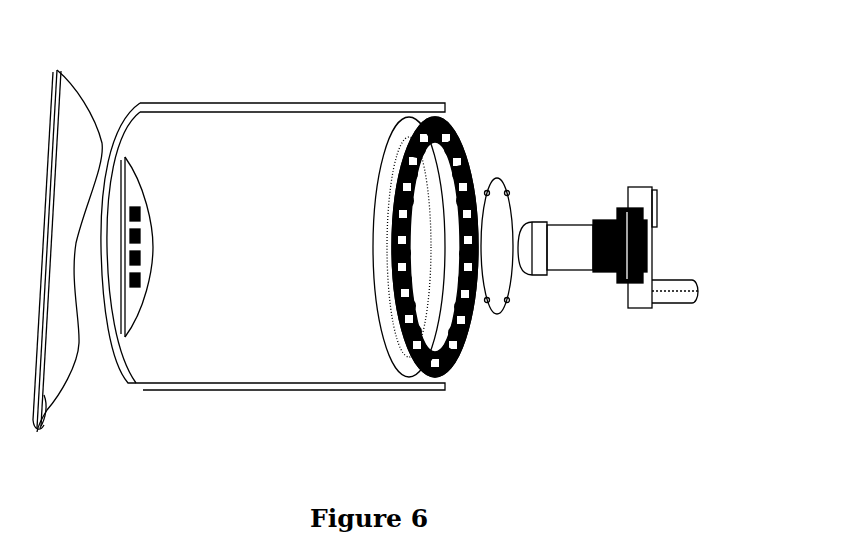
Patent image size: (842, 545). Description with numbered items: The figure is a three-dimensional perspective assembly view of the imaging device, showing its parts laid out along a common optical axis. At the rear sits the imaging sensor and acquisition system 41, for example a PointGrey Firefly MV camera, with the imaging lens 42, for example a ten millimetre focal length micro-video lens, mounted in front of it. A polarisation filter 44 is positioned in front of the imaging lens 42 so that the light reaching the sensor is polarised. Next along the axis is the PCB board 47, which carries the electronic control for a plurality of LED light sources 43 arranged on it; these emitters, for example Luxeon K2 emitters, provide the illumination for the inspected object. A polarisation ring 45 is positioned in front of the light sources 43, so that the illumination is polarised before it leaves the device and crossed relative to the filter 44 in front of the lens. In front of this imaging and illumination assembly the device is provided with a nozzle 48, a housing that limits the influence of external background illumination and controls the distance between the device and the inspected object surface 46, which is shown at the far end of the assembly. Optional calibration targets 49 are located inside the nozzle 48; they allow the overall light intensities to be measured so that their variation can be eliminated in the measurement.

The imaging sensor and acquisition system 41 is at (625, 208).
The imaging lens 42 is at (572, 233).
The LED light sources 43 is at (478, 330).
The polarisation filter 44 is at (497, 285).
The polarisation ring 45 is at (403, 128).
The inspected object surface 46 is at (38, 434).
The PCB board 47 is at (456, 122).
The nozzle 48 is at (260, 122).
The calibration targets 49 is at (128, 316).